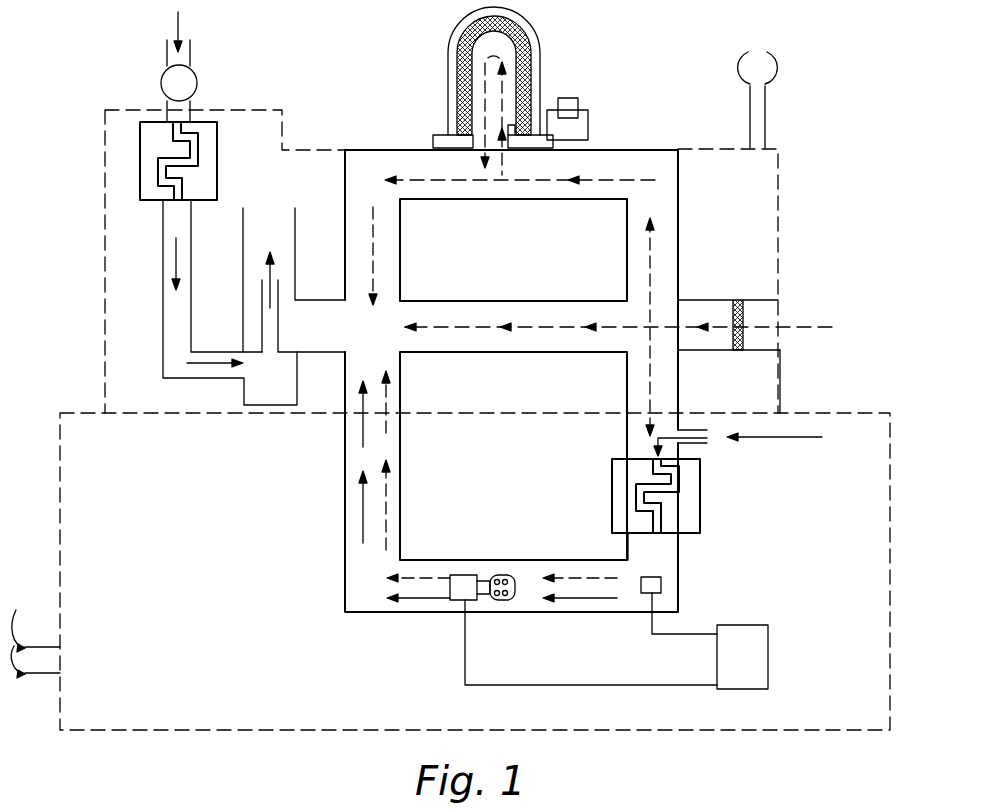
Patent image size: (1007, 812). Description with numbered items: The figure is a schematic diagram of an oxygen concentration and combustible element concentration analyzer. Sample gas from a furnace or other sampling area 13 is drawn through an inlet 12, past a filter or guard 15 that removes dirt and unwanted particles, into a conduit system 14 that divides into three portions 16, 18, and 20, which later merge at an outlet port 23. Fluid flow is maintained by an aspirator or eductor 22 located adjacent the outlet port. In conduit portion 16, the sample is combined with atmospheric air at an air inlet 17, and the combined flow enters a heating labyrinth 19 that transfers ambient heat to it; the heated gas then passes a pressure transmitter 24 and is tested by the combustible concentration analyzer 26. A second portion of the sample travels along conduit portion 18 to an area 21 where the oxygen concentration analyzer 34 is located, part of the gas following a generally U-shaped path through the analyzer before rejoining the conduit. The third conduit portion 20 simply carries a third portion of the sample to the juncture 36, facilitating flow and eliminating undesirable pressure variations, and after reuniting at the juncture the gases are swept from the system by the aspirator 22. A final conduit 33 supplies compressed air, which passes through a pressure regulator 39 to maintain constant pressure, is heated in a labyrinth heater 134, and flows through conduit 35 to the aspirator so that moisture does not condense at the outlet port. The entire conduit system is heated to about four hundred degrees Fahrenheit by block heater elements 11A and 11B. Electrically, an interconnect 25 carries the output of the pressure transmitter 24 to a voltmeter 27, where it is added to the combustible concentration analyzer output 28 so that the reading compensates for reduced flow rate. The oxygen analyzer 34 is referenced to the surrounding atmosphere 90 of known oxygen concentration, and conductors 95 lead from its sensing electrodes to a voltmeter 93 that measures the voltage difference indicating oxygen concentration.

The block heater element 11A is at (760, 87).
The block heater element 11B is at (450, 571).
The inlet 12 is at (770, 310).
The sampling area 13 is at (871, 331).
The conduit system 14 is at (632, 76).
The filter 15 is at (738, 302).
The conduit portion 16 is at (665, 378).
The air inlet 17 is at (712, 437).
The conduit portion 18 is at (669, 263).
The heating labyrinth 19 is at (700, 500).
The third conduit portion 20 is at (584, 313).
The area 21 is at (497, 178).
The aspirator 22 is at (280, 325).
The outlet port 23 is at (284, 229).
The pressure transmitter 24 is at (661, 585).
The electrical interconnect 25 is at (690, 633).
The combustible concentration analyzer 26 is at (465, 575).
The voltmeter 27 is at (770, 650).
The combustible concentration analyzer output 28 is at (600, 685).
The final conduit 33 is at (185, 55).
The oxygen concentration analyzer 34 is at (540, 30).
The conduit 35 is at (182, 313).
The juncture 36 is at (390, 323).
The pressure regulator 39 is at (198, 80).
The surrounding atmosphere 90 is at (378, 74).
The voltmeter 93 is at (568, 98).
The conductors 95 is at (588, 127).
The labyrinth heater 134 is at (218, 165).